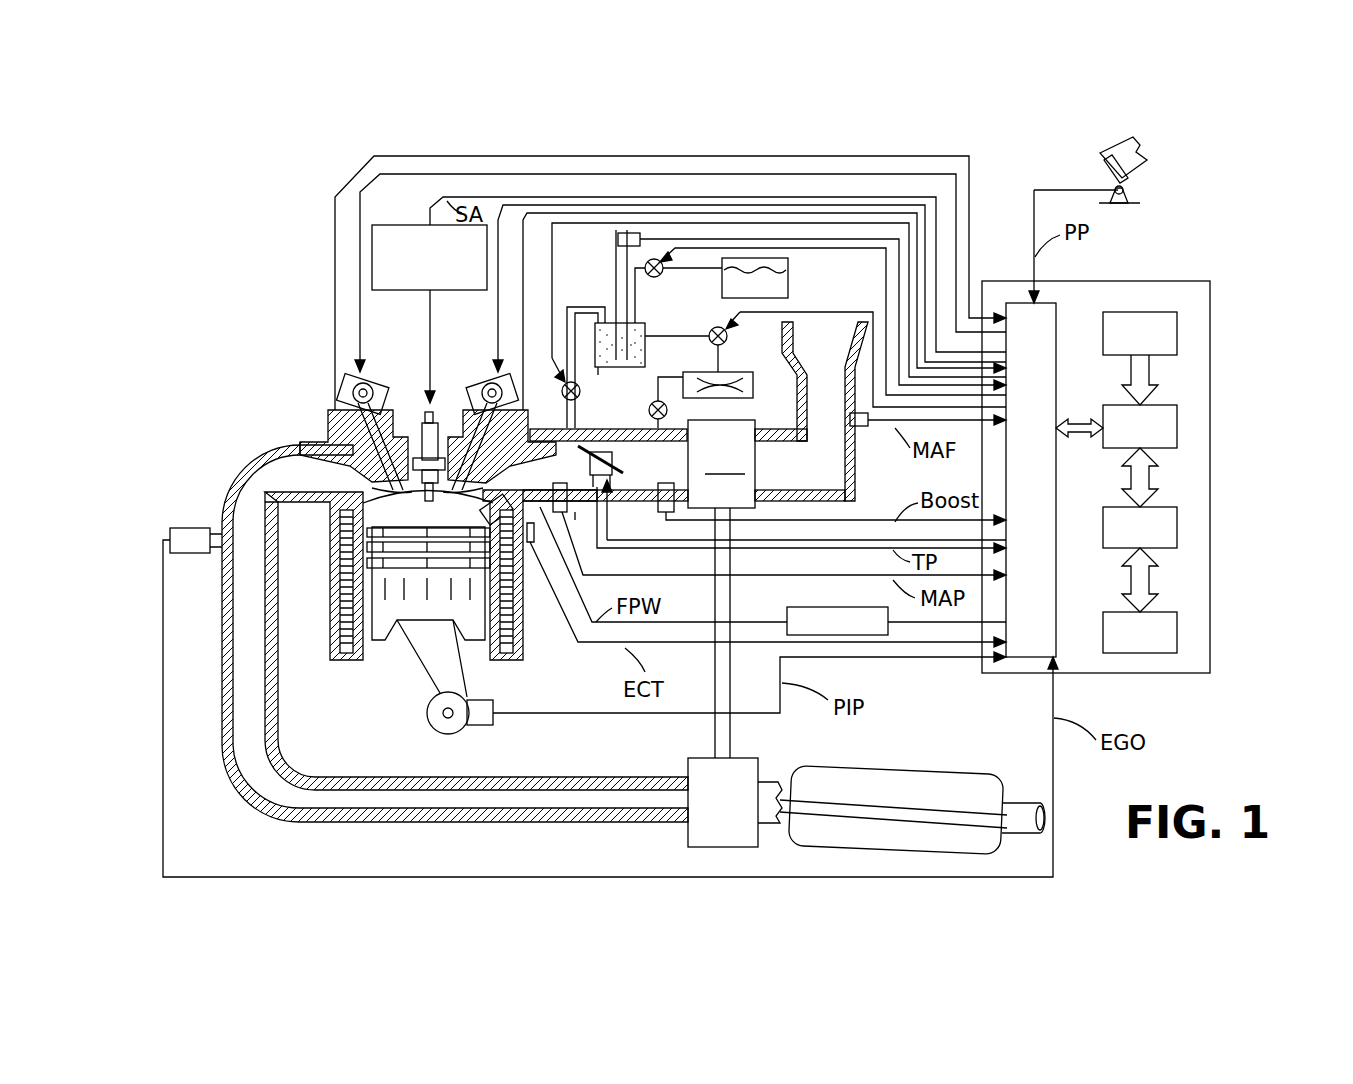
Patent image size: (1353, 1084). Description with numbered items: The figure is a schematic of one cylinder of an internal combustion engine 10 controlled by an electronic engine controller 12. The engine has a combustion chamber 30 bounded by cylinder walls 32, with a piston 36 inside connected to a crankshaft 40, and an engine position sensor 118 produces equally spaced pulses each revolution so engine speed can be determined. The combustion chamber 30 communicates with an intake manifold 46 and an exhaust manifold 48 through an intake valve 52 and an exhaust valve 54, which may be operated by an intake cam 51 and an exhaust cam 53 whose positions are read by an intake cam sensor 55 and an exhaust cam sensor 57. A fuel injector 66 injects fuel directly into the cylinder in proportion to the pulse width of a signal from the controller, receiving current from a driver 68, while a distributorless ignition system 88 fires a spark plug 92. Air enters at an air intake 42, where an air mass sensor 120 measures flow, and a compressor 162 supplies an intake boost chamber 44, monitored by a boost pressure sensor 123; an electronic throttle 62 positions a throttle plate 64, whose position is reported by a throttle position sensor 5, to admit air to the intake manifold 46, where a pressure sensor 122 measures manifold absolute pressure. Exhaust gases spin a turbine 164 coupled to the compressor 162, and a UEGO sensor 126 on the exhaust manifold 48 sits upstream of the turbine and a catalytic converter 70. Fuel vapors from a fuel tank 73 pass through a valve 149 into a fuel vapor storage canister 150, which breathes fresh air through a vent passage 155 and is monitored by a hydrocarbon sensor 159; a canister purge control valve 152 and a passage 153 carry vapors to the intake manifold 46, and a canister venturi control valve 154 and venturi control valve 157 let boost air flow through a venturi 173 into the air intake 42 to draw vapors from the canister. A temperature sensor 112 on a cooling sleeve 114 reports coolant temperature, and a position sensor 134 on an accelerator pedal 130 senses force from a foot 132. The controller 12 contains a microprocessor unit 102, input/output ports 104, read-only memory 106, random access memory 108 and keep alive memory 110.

The internal combustion engine 10 is at (258, 360).
The electronic engine controller 12 is at (1200, 282).
The combustion chamber 30 is at (350, 605).
The cylinder walls 32 is at (370, 650).
The piston 36 is at (410, 608).
The crankshaft 40 is at (432, 730).
The air intake 42 is at (835, 470).
The intake boost chamber 44 is at (672, 474).
The intake manifold 46 is at (567, 474).
The exhaust manifold 48 is at (308, 484).
The intake cam 51 is at (485, 378).
The intake valve 52 is at (447, 460).
The exhaust cam 53 is at (370, 378).
The exhaust valve 54 is at (330, 445).
The intake cam sensor 55 is at (505, 394).
The exhaust cam sensor 57 is at (350, 394).
The throttle position sensor 5 is at (580, 515).
The electronic throttle 62 is at (612, 475).
The throttle plate 64 is at (592, 447).
The fuel injector 66 is at (500, 502).
The driver 68 is at (805, 607).
The catalytic converter 70 is at (965, 778).
The fuel tank 73 is at (788, 290).
The distributorless ignition system 88 is at (380, 225).
The spark plug 92 is at (424, 420).
The microprocessor unit 102 is at (1178, 424).
The input/output ports 104 is at (1058, 313).
The read-only memory 106 is at (1178, 330).
The random access memory 108 is at (1178, 527).
The keep alive memory 110 is at (1178, 630).
The temperature sensor 112 is at (540, 605).
The cooling sleeve 114 is at (522, 560).
The engine position sensor 118 is at (488, 726).
The air mass sensor 120 is at (866, 427).
The pressure sensor 122 is at (575, 535).
The boost pressure sensor 123 is at (662, 512).
The Universal Exhaust Gas Oxygen sensor 126 is at (168, 530).
The accelerator pedal 130 is at (1100, 162).
The foot 132 is at (1147, 152).
The position sensor 134 is at (1128, 192).
The valve 149 is at (660, 275).
The fuel vapor storage canister 150 is at (645, 355).
The canister purge control valve 152 is at (566, 396).
The passage 153 is at (592, 365).
The canister venturi control valve 154 is at (726, 342).
The vent passage 155 is at (612, 292).
The venturi control valve 157 is at (668, 410).
The hydrocarbon sensor 159 is at (616, 240).
The compressor 162 is at (721, 589).
The turbine 164 is at (688, 838).
The venturi 173 is at (716, 395).